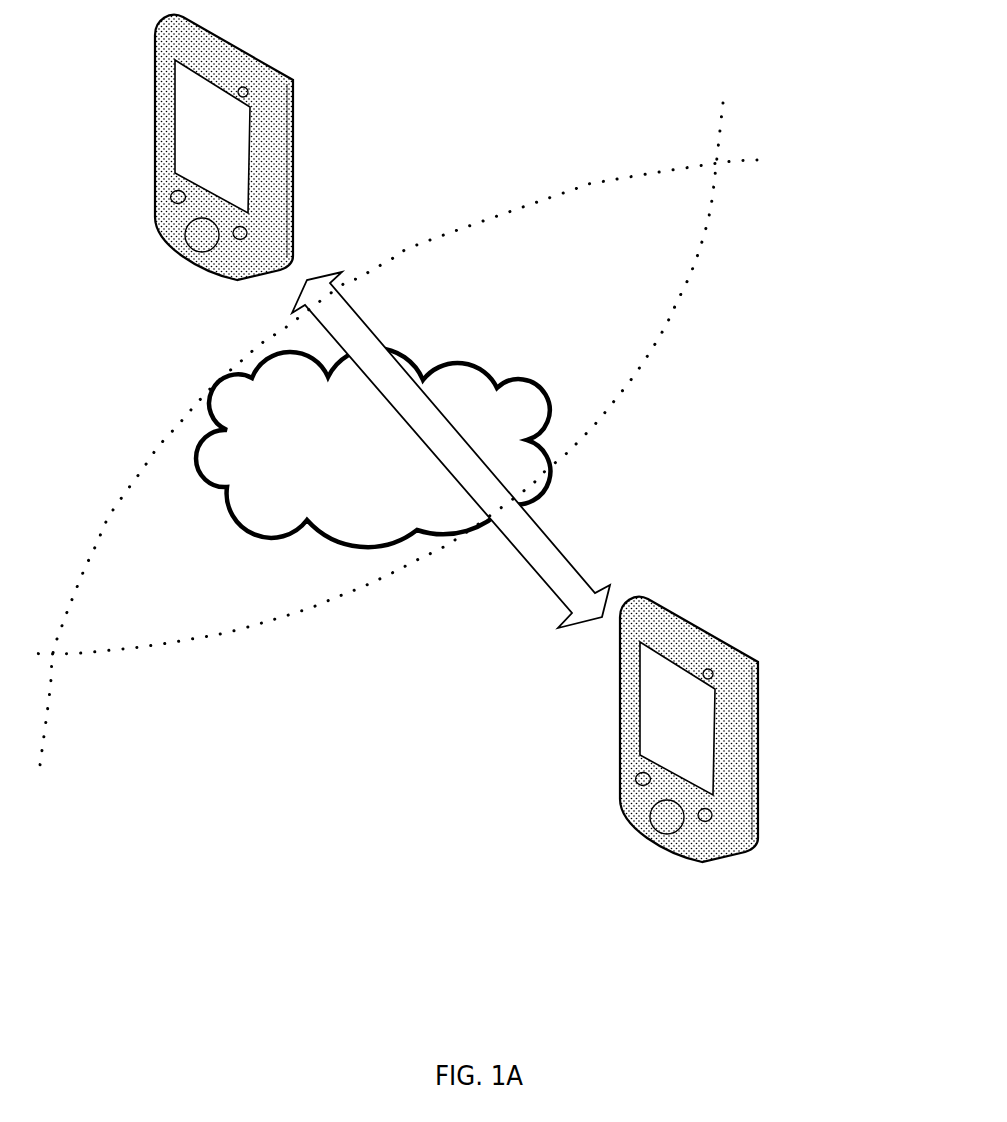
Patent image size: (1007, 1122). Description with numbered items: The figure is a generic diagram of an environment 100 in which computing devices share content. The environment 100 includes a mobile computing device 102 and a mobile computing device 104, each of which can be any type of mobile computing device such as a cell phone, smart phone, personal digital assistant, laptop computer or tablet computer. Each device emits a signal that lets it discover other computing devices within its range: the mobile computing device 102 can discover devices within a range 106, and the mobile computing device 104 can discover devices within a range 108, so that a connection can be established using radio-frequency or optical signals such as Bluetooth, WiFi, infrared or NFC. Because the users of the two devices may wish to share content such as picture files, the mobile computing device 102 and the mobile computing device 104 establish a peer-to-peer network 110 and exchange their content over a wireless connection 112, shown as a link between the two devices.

The environment 100 is at (875, 23).
The mobile computing device 102 is at (133, 87).
The mobile computing device 104 is at (592, 714).
The range 106 is at (742, 125).
The range 108 is at (70, 732).
The peer-to-peer network 110 is at (337, 470).
The wireless connection 112 is at (391, 320).